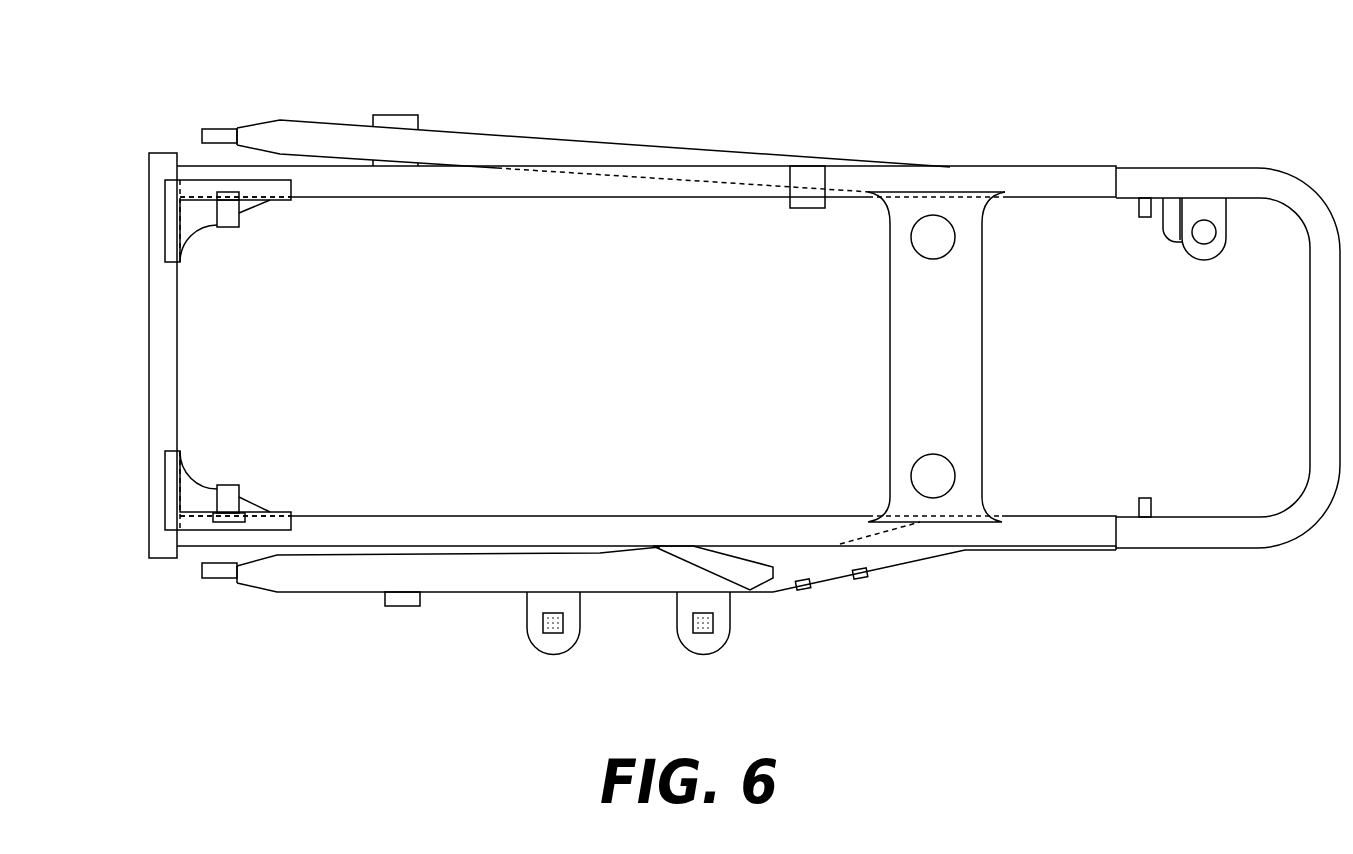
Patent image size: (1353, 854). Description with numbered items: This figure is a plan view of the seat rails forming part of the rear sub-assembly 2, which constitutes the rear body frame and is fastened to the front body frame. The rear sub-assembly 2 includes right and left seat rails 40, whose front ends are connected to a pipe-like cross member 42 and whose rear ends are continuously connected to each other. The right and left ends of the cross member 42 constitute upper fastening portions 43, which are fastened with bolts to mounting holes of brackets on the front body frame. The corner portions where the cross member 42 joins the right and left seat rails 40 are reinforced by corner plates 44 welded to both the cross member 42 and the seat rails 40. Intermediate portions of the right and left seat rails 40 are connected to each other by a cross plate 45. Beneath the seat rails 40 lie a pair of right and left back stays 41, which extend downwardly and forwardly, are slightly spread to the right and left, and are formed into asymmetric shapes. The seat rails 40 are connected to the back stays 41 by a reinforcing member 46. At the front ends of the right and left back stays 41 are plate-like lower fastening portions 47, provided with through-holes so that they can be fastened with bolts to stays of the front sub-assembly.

The rear sub-assembly 2 is at (880, 90).
The seat rails 40 is at (484, 186).
The back stays 41 is at (325, 122).
The cross member 42 is at (148, 358).
The upper fastening portions 43 is at (163, 153).
The corner plates 44 is at (200, 232).
The cross plate 45 is at (905, 352).
The reinforcing member 46 is at (730, 571).
The lower fastening portions 47 is at (222, 129).